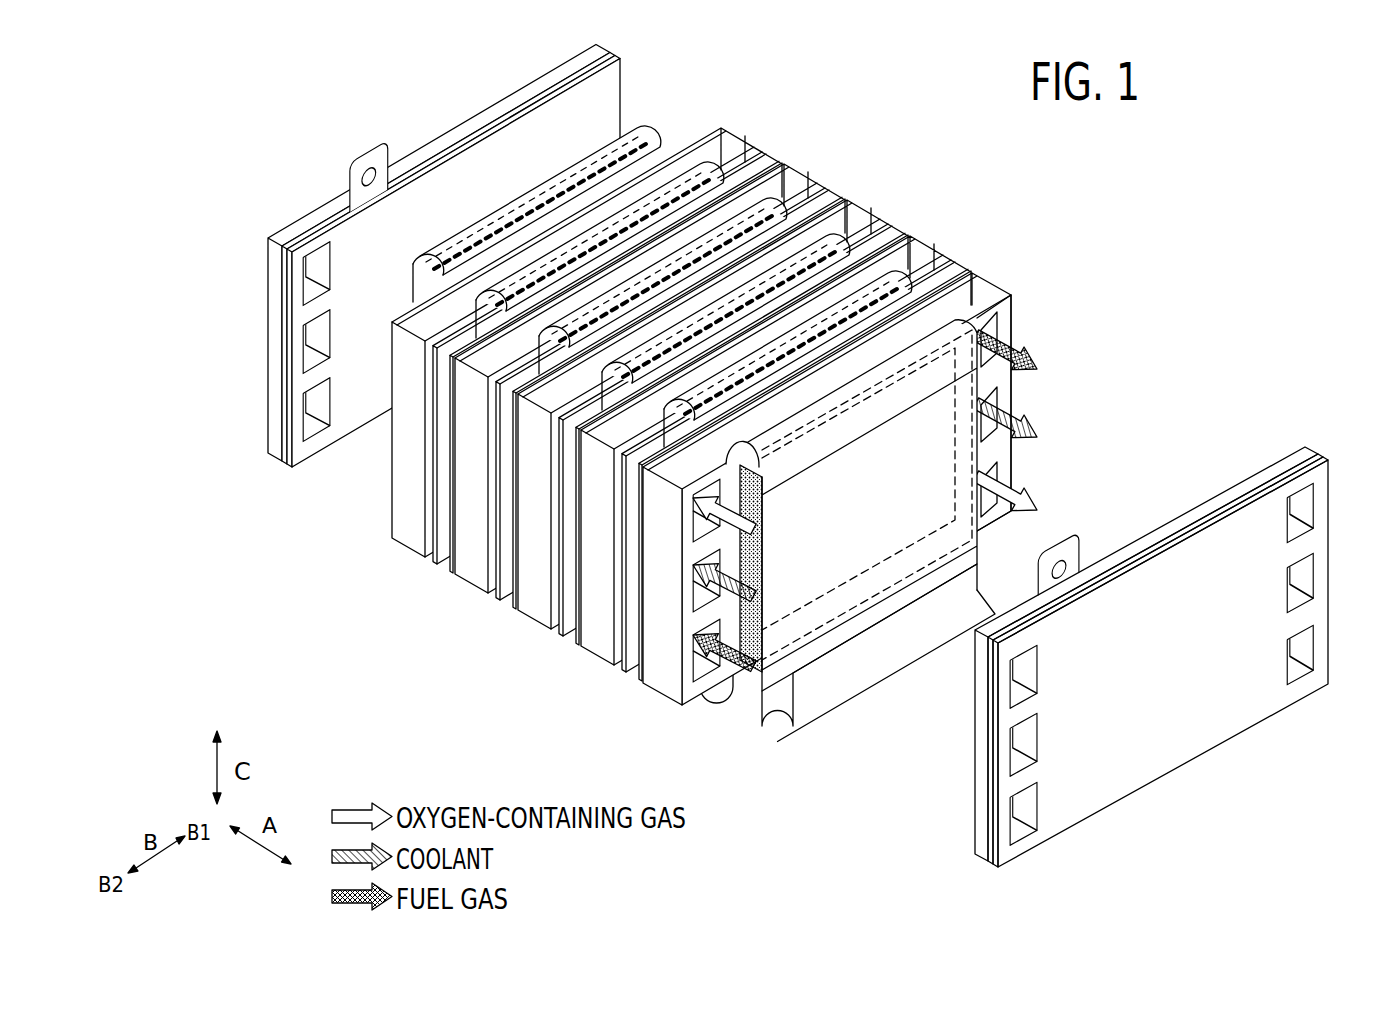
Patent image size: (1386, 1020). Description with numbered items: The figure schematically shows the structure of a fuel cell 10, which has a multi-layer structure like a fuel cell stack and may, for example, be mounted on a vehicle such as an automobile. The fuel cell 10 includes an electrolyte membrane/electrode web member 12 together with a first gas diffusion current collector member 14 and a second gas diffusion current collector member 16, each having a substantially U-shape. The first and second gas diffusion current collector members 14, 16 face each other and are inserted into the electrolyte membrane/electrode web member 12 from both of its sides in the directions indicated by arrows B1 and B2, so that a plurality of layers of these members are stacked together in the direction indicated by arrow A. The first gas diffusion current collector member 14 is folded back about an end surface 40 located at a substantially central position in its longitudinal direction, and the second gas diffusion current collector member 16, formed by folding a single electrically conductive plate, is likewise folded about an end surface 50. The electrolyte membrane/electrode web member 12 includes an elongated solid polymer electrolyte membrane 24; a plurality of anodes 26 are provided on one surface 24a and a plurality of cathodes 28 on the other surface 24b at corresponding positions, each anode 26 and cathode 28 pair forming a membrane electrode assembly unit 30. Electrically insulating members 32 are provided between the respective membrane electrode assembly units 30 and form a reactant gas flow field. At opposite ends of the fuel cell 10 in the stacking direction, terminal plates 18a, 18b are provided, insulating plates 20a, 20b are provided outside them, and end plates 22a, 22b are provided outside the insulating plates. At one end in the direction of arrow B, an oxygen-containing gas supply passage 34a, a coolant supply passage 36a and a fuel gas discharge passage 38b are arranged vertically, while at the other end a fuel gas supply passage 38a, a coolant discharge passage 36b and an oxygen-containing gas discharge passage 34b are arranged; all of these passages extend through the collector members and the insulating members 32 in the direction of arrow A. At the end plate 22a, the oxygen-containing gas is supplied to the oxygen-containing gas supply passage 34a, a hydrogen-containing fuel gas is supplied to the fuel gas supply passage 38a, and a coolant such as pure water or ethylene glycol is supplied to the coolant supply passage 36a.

The fuel cell 10 is at (826, 456).
The electrolyte membrane/electrode web member 12 is at (966, 578).
The first gas diffusion current collector member 14 is at (661, 697).
The second gas diffusion current collector member 16 is at (909, 523).
The terminal plate 18a is at (1298, 451).
The terminal plate 18b is at (498, 127).
The insulating plate 20a is at (1313, 448).
The insulating plate 20b is at (464, 140).
The end plate 22a is at (1189, 662).
The end plate 22b is at (430, 152).
The solid polymer electrolyte membrane 24 is at (997, 653).
The one surface of the solid polymer electrolyte membrane 24a is at (960, 576).
The other surface of the solid polymer electrolyte membrane 24b is at (990, 606).
The anode 26 is at (878, 537).
The cathode 28 is at (822, 566).
The membrane electrode assembly unit 30 is at (867, 583).
The electrically insulating member 32 is at (999, 289).
The oxygen-containing gas supply passage 34a is at (1035, 666).
The oxygen-containing gas discharge passage 34b is at (1314, 642).
The coolant supply passage 36a is at (1036, 738).
The coolant discharge passage 36b is at (1314, 576).
The fuel gas supply passage 38a is at (1316, 502).
The fuel gas discharge passage 38b is at (1035, 801).
The end surface 40 is at (762, 465).
The end surface 50 is at (773, 293).